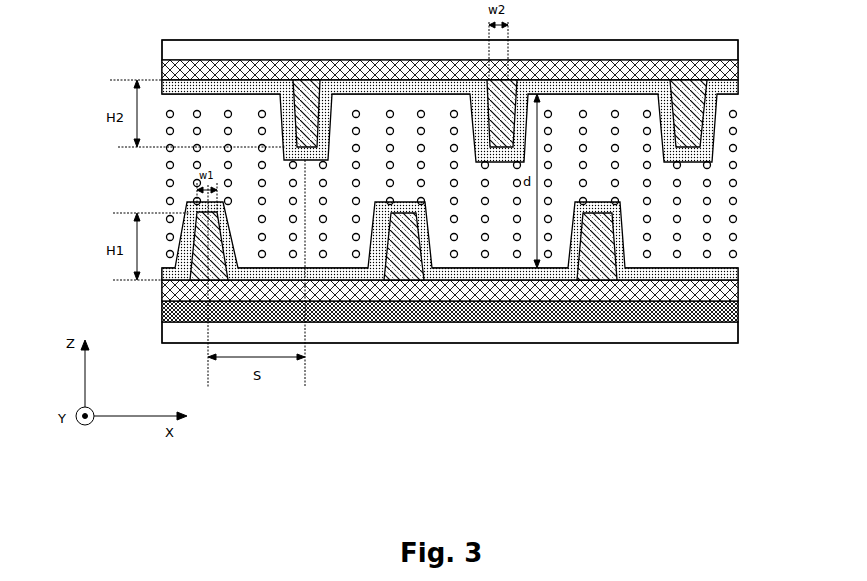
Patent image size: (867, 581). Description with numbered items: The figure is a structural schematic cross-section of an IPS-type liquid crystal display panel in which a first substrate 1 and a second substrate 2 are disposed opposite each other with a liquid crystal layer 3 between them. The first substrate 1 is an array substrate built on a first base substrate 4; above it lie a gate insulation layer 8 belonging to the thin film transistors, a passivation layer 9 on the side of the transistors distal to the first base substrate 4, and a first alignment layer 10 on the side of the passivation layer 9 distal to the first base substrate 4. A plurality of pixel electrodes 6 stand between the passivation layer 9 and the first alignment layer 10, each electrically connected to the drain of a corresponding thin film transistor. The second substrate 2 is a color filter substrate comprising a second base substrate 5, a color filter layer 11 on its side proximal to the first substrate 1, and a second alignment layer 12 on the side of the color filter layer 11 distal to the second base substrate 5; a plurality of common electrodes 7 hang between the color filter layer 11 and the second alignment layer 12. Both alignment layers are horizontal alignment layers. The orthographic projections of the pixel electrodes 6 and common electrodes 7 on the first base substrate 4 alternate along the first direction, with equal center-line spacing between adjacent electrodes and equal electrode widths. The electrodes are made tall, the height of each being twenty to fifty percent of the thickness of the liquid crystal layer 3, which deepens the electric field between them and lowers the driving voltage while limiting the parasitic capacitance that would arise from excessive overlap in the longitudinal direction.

The first substrate 1 is at (130, 300).
The second substrate 2 is at (130, 72).
The liquid crystal layer 3 is at (710, 185).
The first base substrate 4 is at (738, 336).
The second base substrate 5 is at (738, 47).
The pixel electrode 6 is at (403, 267).
The common electrode 7 is at (300, 96).
The gate insulation layer 8 is at (738, 311).
The passivation layer 9 is at (738, 290).
The first alignment layer 10 is at (738, 272).
The color filter layer 11 is at (738, 70).
The second alignment layer 12 is at (738, 92).